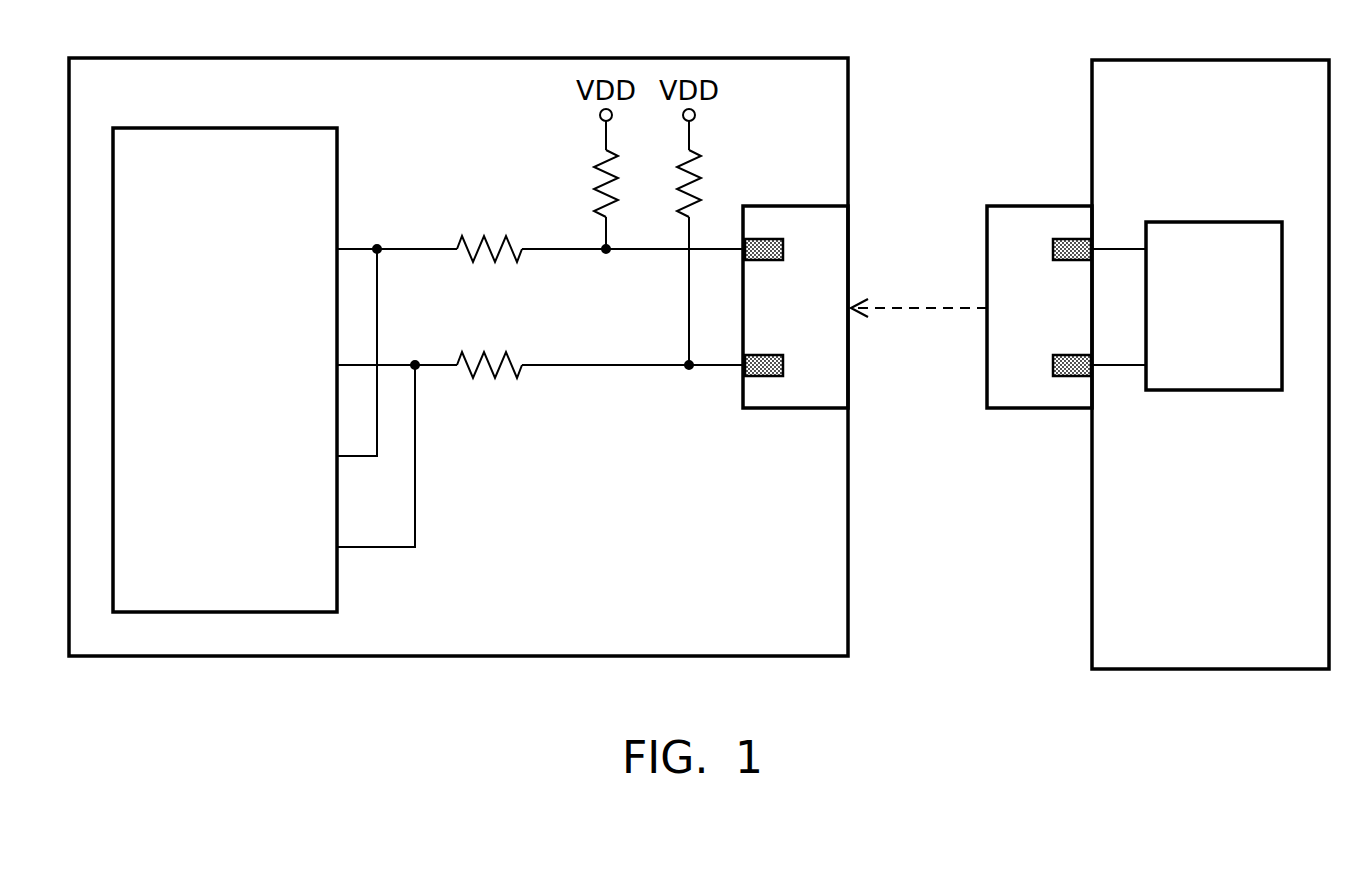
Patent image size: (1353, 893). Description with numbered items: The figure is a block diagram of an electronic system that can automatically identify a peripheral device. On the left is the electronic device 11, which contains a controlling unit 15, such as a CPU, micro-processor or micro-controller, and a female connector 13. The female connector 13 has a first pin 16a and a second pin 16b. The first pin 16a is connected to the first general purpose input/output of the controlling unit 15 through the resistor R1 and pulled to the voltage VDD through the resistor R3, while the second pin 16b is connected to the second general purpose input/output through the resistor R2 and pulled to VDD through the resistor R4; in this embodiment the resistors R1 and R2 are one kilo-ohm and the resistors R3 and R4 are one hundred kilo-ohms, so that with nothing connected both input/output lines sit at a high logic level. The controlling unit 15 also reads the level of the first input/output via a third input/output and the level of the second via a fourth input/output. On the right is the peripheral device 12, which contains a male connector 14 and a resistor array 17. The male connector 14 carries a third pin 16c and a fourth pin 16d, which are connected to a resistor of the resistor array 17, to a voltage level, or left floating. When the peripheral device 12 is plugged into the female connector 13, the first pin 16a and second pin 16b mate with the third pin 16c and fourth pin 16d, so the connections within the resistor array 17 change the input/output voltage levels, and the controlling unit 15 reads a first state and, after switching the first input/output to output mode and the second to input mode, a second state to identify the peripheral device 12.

The electronic device 11 is at (72, 58).
The peripheral device 12 is at (1095, 60).
The female connector 13 is at (770, 206).
The male connector 14 is at (1014, 206).
The controlling unit 15 is at (280, 128).
The first pin 16a is at (763, 261).
The second pin 16b is at (763, 354).
The third pin 16c is at (1072, 261).
The fourth pin 16d is at (1072, 354).
The resistor array 17 is at (1216, 222).
The resistor R1 is at (506, 236).
The resistor R2 is at (506, 352).
The resistor R3 is at (594, 167).
The resistor R4 is at (701, 156).